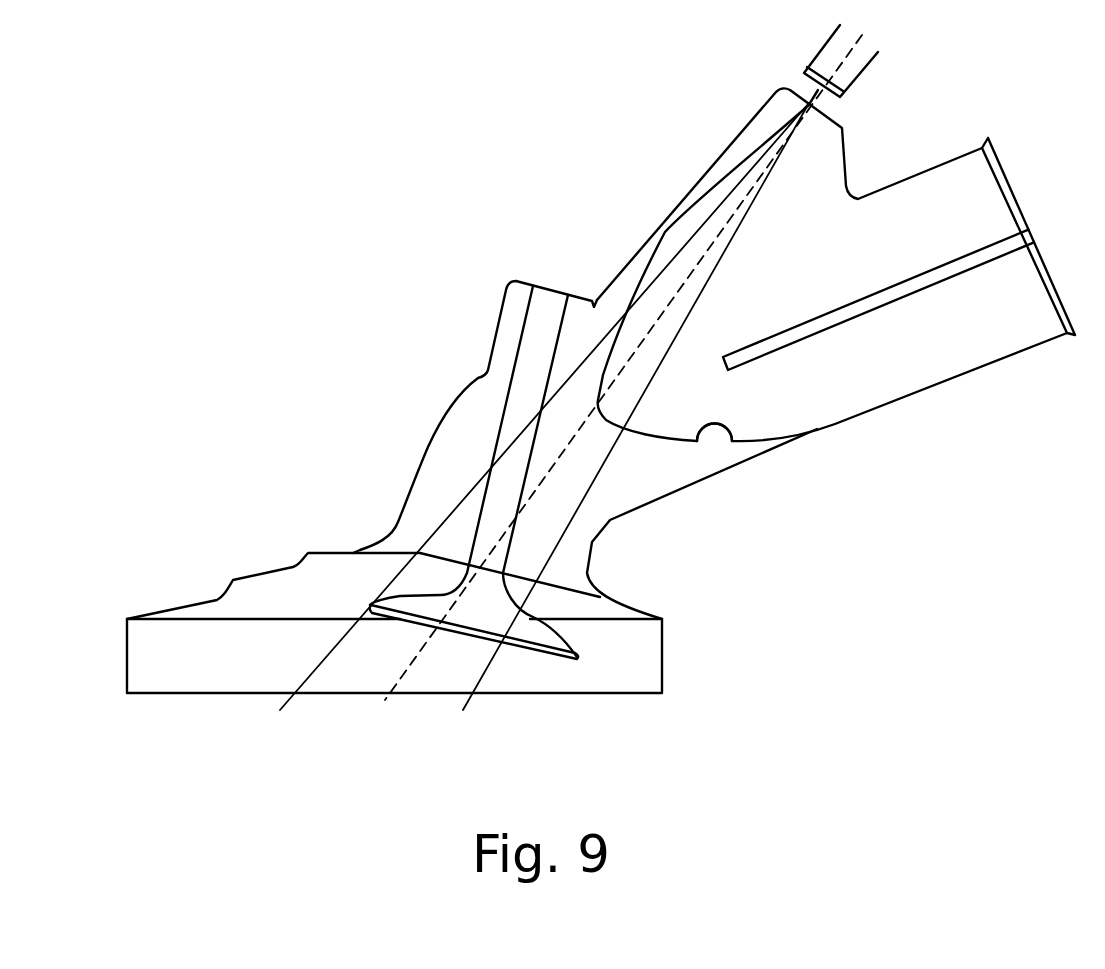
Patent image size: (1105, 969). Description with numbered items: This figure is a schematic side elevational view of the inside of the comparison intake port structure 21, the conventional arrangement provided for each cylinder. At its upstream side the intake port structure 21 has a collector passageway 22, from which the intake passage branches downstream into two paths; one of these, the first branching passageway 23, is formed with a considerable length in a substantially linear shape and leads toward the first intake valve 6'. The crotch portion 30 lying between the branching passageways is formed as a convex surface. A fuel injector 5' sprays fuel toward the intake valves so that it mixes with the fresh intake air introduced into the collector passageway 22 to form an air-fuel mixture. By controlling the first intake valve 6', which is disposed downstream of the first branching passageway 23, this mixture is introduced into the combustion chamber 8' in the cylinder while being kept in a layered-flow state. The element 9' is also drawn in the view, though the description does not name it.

The fuel injector 5' is at (868, 64).
The comparison intake port structure 21 is at (608, 248).
The first branching passageway 23 is at (452, 403).
The detector plate 9' is at (899, 294).
The collector passageway 22 is at (850, 418).
The crotch portion 30 is at (732, 441).
The first intake valve 6' is at (474, 521).
The combustion chamber 8' is at (571, 402).